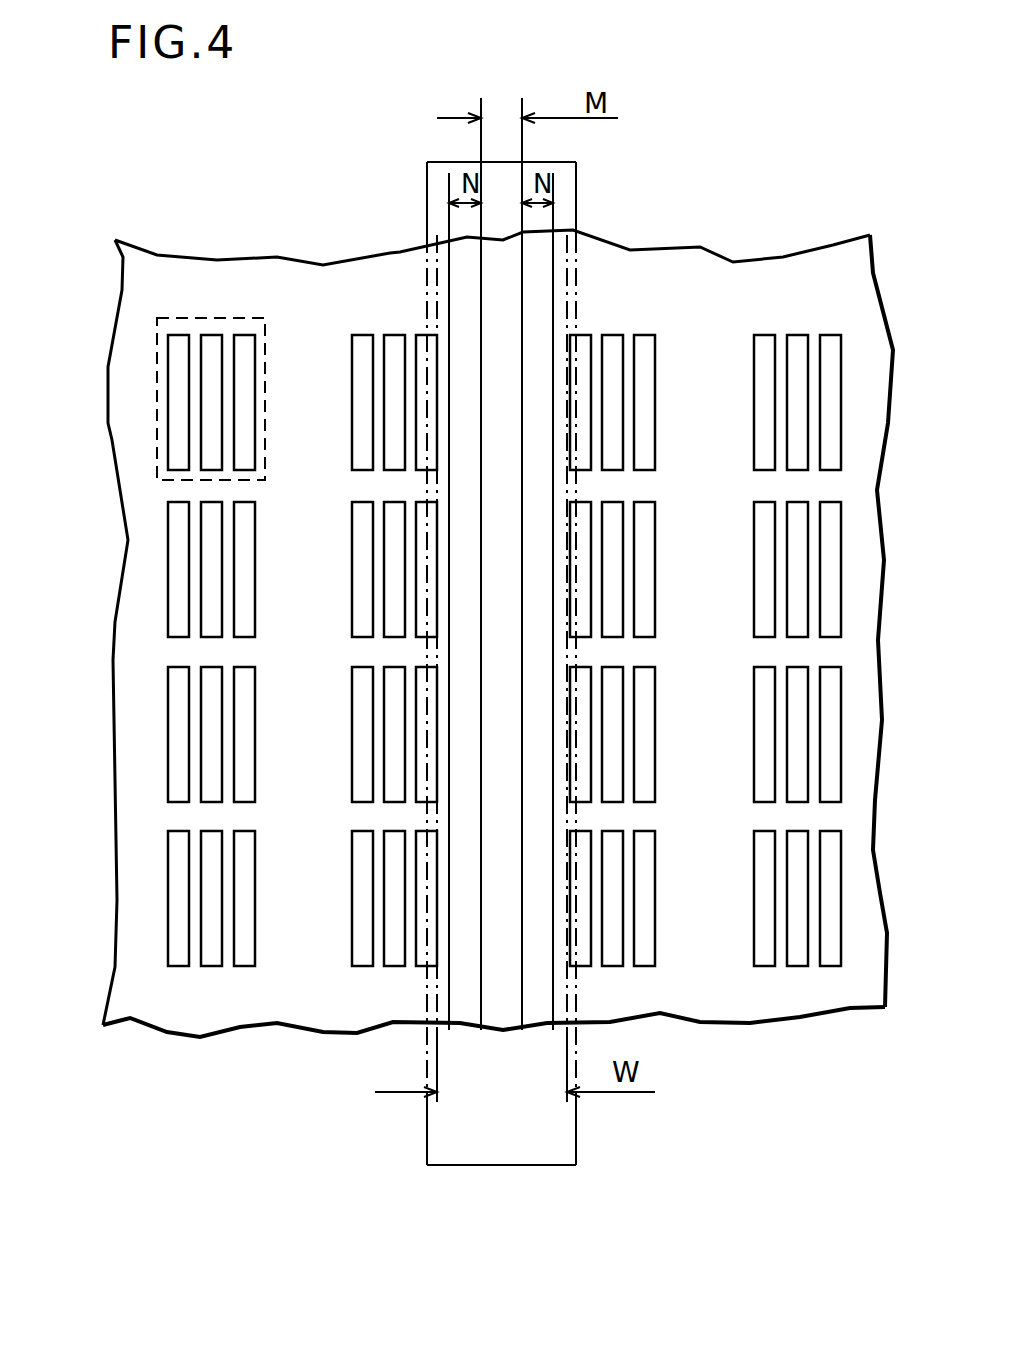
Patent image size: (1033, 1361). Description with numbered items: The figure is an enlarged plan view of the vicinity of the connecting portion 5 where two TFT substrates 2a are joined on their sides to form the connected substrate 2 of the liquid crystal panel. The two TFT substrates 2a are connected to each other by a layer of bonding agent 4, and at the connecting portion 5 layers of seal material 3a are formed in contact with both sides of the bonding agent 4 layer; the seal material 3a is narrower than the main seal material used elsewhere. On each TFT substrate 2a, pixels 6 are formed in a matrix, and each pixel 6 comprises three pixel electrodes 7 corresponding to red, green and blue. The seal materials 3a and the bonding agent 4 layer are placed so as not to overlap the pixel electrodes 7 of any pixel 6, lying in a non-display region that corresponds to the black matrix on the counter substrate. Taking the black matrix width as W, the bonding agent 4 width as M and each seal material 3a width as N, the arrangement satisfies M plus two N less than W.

The connected substrate 2 is at (115, 622).
The TFT substrate 2a is at (342, 285).
The seal material 3a is at (535, 1030).
The bonding agent 4 is at (507, 232).
The connecting portion 5 is at (507, 1167).
The pixel 6 is at (157, 443).
The pixel electrode 7 is at (247, 335).